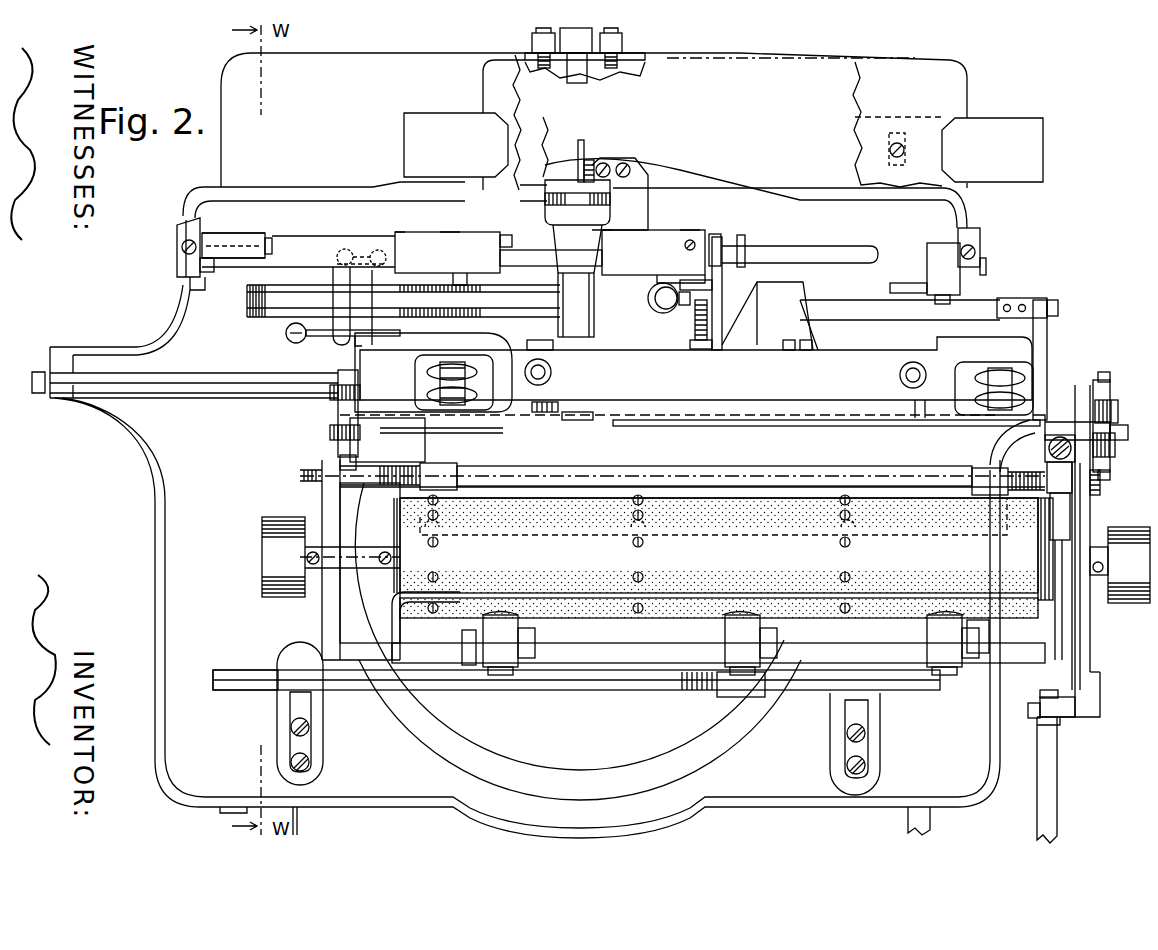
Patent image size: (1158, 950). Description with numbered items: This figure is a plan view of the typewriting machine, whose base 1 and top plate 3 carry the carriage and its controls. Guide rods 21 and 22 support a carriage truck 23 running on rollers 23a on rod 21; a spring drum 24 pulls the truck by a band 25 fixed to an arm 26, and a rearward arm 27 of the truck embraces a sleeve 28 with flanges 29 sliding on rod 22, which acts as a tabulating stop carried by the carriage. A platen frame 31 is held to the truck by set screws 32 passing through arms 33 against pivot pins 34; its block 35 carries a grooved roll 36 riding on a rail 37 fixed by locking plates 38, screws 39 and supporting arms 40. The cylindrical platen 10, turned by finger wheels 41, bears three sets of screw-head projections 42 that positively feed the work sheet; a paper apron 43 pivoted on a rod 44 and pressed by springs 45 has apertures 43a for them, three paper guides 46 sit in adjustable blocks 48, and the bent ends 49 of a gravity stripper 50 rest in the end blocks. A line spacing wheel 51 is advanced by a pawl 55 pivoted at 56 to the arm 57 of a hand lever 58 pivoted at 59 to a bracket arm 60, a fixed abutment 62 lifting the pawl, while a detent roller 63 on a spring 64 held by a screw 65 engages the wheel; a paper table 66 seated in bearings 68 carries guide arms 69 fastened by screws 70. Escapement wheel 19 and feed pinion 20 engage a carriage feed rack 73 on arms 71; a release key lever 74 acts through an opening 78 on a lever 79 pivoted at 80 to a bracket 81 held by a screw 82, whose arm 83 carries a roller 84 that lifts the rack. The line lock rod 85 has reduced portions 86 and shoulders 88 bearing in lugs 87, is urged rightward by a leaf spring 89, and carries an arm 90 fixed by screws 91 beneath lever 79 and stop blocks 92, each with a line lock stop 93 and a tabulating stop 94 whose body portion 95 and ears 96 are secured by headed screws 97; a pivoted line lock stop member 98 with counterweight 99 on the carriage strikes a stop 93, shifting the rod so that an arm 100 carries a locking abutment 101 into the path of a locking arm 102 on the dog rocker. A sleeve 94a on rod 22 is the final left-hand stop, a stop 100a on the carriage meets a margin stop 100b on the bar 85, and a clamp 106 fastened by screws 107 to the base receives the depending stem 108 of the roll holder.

The base 1 is at (575, 140).
The top plate 3 is at (525, 592).
The platen 10 is at (723, 549).
The escapement wheel 19 is at (545, 206).
The feed pinion 20 is at (580, 420).
The guide rod 21 is at (222, 390).
The guide rod 22 is at (262, 237).
The carriage truck 23 is at (692, 412).
The rollers 23a is at (420, 372).
The spring drum 24 is at (270, 317).
The band 25 is at (302, 290).
The arm 26 is at (1048, 318).
The rearwardly extending arm 27 is at (730, 293).
The sleeve 28 is at (717, 234).
The flanges 29 is at (752, 248).
The platen frame 31 is at (322, 603).
The set screws 32 is at (1112, 372).
The arms 33 is at (335, 395).
The pivot pins 34 is at (1095, 425).
The block 35 is at (741, 687).
The grooved roll 36 is at (690, 695).
The rail 37 is at (588, 690).
The locking plates 38 is at (318, 710).
The screws 39 is at (310, 735).
The supporting arms 40 is at (280, 690).
The finger wheels 41 is at (706, 560).
The projections 42 is at (640, 495).
The paper apron 43 is at (880, 495).
The apertures 43a is at (410, 520).
The rod 44 is at (478, 466).
The springs 45 is at (420, 463).
The paper guides 46 is at (520, 618).
The adjustable block 48 is at (536, 640).
The inwardly bent ends 49 is at (470, 665).
The gravity stripper 50 is at (690, 590).
The line spacing wheel 51 is at (1062, 530).
The line spacing pawl 55 is at (1090, 658).
The pivot 56 is at (1075, 712).
The upwardly projecting arm 57 is at (1047, 690).
The hand lever 58 is at (1037, 795).
The pivot 59 is at (1028, 715).
The depending bracket arm 60 is at (1092, 677).
The fixed abutment 62 is at (1042, 725).
The detent roller 63 is at (1080, 500).
The spring 64 is at (1058, 501).
The screw 65 is at (1040, 400).
The paper table 66 is at (899, 124).
The bearings 68 is at (552, 372).
The guide arms 69 is at (988, 108).
The screw 70 is at (905, 152).
The arms 71 is at (505, 428).
The carriage feed rack 73 is at (604, 420).
The key lever 74 is at (300, 820).
The opening 78 is at (296, 343).
The lever 79 is at (357, 342).
The pivot 80 is at (440, 300).
The bracket 81 is at (380, 340).
The screw 82 is at (470, 372).
The forwardly extending arm 83 is at (530, 340).
The roller 84 is at (545, 412).
The line lock rod 85 is at (292, 247).
The reduced portions 86 is at (197, 290).
The lugs 87 is at (177, 272).
The shoulders 88 is at (207, 272).
The leaf spring 89 is at (180, 238).
The forwardly extending arm 90 is at (345, 330).
The screws 91 is at (347, 250).
The stop blocks 92 is at (550, 252).
The line lock stop 93 is at (460, 278).
The tabulating stop 94 is at (420, 232).
The sleeve 94a is at (215, 235).
The body portion 95 is at (452, 232).
The ears 96 is at (507, 236).
The headed screws 97 is at (395, 235).
The line lock stop member 98 is at (707, 300).
The counterweight 99 is at (670, 312).
The arm 100 is at (648, 205).
The stop 100a is at (767, 316).
The margin stop 100b is at (890, 289).
The locking abutment 101 is at (592, 163).
The locking arm 102 is at (581, 140).
The clamp 106 is at (588, 53).
The screws 107 is at (532, 43).
The depending stem 108 is at (567, 62).